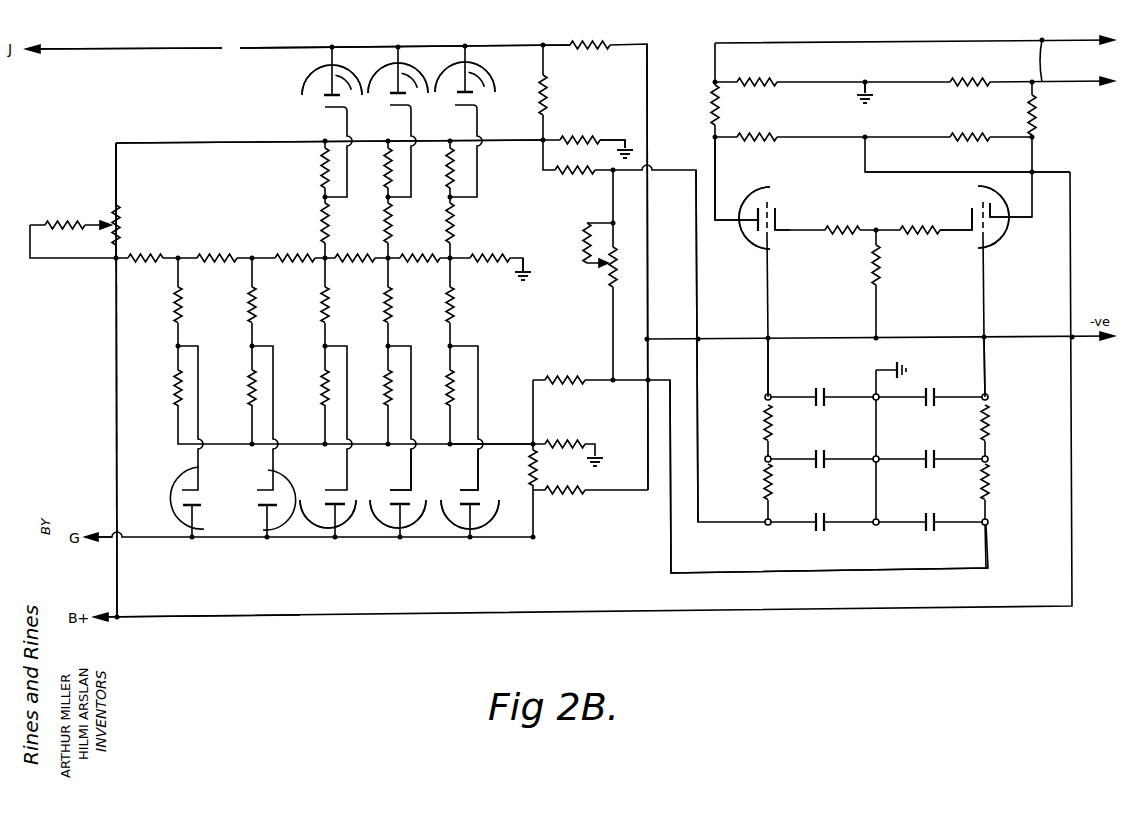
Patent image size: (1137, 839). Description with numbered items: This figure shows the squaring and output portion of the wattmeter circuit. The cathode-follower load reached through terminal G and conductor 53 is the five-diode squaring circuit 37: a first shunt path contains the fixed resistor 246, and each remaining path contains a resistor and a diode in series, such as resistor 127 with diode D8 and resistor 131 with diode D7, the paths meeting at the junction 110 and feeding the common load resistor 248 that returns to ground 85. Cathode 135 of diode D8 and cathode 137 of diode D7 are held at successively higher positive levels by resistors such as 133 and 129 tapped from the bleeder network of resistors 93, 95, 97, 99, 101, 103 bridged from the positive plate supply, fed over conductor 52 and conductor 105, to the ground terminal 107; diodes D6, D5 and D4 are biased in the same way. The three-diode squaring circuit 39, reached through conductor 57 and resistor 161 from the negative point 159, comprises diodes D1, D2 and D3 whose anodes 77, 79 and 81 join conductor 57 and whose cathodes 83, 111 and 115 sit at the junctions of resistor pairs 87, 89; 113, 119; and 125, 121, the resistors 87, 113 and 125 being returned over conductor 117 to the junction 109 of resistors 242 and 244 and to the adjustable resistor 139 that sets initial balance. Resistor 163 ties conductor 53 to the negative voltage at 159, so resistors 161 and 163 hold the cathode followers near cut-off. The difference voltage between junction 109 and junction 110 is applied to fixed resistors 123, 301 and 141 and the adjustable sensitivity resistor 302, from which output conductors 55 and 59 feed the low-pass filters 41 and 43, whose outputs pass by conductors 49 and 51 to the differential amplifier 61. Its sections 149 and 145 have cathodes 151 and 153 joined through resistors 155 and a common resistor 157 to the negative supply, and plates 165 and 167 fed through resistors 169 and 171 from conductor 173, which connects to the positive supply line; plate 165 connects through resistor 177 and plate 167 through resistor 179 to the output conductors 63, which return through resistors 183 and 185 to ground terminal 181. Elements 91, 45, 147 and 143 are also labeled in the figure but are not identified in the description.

The squaring circuit 39 is at (381, 37).
The conductor 57 is at (142, 50).
The anode 77 is at (347, 77).
The anode 79 is at (416, 77).
The anode 81 is at (486, 75).
The cathode 83 is at (331, 108).
The cathode 111 is at (407, 107).
The cathode 115 is at (474, 107).
The resistor 87 is at (321, 170).
The resistor 113 is at (385, 181).
The resistor 125 is at (447, 181).
The resistor 89 is at (322, 222).
The resistor 119 is at (392, 222).
The resistor 121 is at (458, 225).
The bleeder resistor 93 is at (135, 253).
The bleeder resistor 95 is at (189, 253).
The bleeder resistor 97 is at (316, 253).
The bleeder resistor 99 is at (380, 253).
The bleeder resistor 101 is at (442, 253).
The bleeder resistor 103 is at (487, 253).
The ground terminal 107 is at (530, 284).
The variable resistor 139 is at (111, 210).
The conductor 105 is at (113, 322).
The resistor 91 is at (321, 298).
The resistor 133 is at (386, 302).
The resistor 129 is at (452, 302).
The resistor 131 is at (386, 390).
The resistor 127 is at (450, 384).
The cathode 137 is at (403, 484).
The cathode 135 is at (475, 484).
The squaring circuit 37 is at (346, 571).
The conductor 53 is at (128, 541).
The conductor 52 is at (125, 620).
The resistor 161 is at (604, 43).
The resistor 242 is at (549, 100).
The junction 109 is at (552, 136).
The load resistor 244 is at (614, 132).
The ground 45 is at (632, 149).
The conductor 117 is at (498, 144).
The fixed resistor 123 is at (580, 175).
The fixed resistor 301 is at (572, 243).
The adjustable resistor 302 is at (610, 283).
The fixed resistor 141 is at (582, 375).
The junction 110 is at (528, 443).
The load resistor 248 is at (576, 440).
The fixed resistor 246 is at (540, 470).
The ground 85 is at (603, 467).
The resistor 163 is at (585, 498).
The negative terminal 159 is at (648, 330).
The output conductor 59 is at (699, 305).
The output conductor 55 is at (670, 518).
The conductor 51 is at (769, 322).
The conductor 49 is at (984, 318).
The low-pass filter 43 is at (765, 459).
The low-pass filter 41 is at (990, 458).
The resistor 177 is at (712, 105).
The resistor 183 is at (780, 80).
The resistor 185 is at (960, 80).
The output conductors 63 is at (1055, 61).
The ground terminal 181 is at (870, 100).
The resistor 169 is at (780, 135).
The resistor 171 is at (978, 130).
The resistor 179 is at (1040, 118).
The conductor 173 is at (920, 172).
The plate 165 is at (740, 205).
The differential amplifier section 149 is at (748, 243).
The cathode 147 is at (772, 238).
The cathode 151 is at (782, 212).
The differential amplifier 61 is at (884, 200).
The resistors 155 is at (852, 228).
The common resistor 157 is at (884, 268).
The cathode 153 is at (975, 208).
The plate 167 is at (993, 210).
The triode 143 is at (1000, 245).
The differential amplifier section 145 is at (1010, 224).
The diode D1 is at (303, 80).
The diode D2 is at (402, 70).
The diode D3 is at (470, 72).
The diode D4 is at (180, 533).
The diode D5 is at (287, 528).
The diode D6 is at (350, 524).
The diode D7 is at (422, 524).
The diode D8 is at (492, 526).